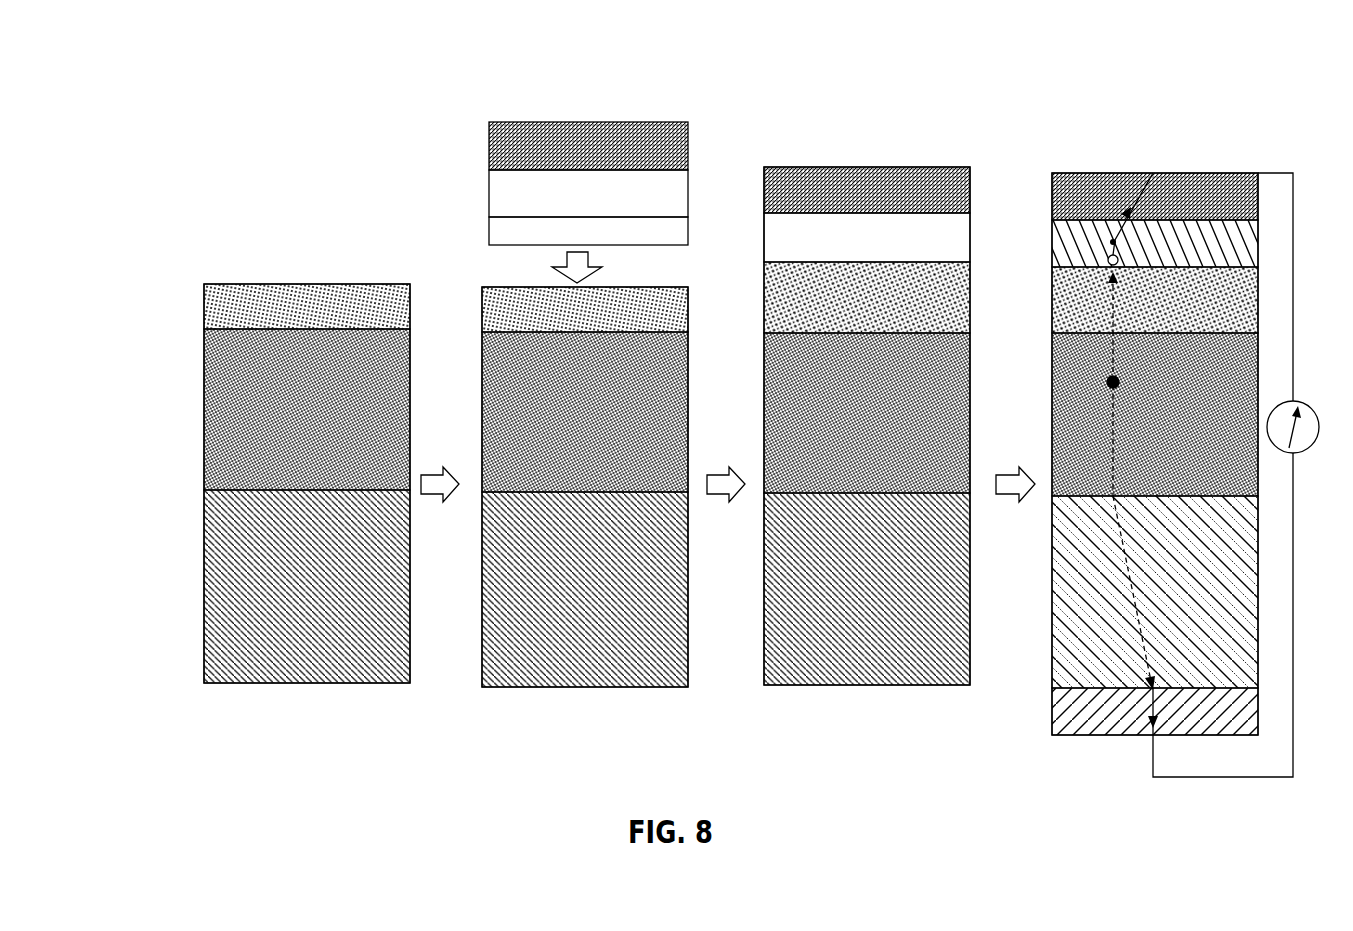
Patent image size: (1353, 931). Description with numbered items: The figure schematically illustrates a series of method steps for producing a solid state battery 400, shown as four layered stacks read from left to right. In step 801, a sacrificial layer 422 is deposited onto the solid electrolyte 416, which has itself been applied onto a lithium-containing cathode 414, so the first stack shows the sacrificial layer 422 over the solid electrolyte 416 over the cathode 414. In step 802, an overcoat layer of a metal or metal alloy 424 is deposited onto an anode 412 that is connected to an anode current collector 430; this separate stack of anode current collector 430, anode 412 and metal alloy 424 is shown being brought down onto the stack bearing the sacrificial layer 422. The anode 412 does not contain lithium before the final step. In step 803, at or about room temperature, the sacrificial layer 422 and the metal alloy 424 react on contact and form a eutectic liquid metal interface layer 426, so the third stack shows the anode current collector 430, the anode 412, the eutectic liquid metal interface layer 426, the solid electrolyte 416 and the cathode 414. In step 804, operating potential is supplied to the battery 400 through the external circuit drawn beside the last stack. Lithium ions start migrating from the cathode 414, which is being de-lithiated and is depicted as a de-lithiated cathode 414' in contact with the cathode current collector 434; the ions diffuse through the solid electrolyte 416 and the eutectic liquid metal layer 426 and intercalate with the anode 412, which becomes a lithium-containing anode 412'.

The battery 400 is at (1056, 68).
The anode 412 is at (695, 214).
The lithium-containing anode 412' is at (1123, 243).
The lithium-containing cathode 414 is at (552, 588).
The de-lithiated cathode 414' is at (1116, 592).
The solid electrolyte 416 is at (212, 410).
The sacrificial layer 422 is at (212, 310).
The metal alloy 424 is at (500, 232).
The eutectic liquid metal interface layer 426 is at (776, 305).
The anode current collector 430 is at (500, 150).
The cathode current collector 434 is at (1058, 712).
The step 801 is at (304, 697).
The step 802 is at (577, 698).
The step 803 is at (847, 710).
The step 804 is at (1102, 750).